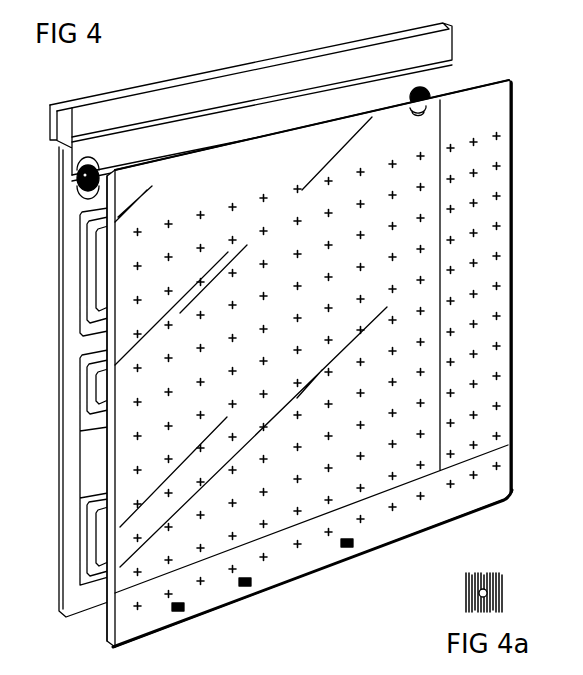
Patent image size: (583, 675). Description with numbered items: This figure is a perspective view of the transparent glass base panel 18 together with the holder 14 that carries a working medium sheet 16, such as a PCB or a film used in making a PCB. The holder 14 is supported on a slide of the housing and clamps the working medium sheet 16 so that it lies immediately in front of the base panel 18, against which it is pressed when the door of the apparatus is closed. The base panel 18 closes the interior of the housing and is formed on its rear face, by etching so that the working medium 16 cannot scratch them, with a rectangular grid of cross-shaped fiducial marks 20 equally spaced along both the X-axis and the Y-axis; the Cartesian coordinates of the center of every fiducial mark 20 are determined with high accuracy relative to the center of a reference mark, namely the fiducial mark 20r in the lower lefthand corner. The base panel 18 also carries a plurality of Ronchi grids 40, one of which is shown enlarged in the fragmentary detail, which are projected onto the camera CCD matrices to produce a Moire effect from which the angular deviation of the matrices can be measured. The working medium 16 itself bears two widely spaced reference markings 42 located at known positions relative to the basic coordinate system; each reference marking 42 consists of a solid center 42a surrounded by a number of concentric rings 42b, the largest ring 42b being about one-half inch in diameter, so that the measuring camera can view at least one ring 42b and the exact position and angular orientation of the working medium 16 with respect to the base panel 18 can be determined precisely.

In FIG. 4, the holder 14 is at (52, 130).
In FIG. 4, the working medium sheet 16 is at (72, 348).
In FIG. 4, the base panel 18 is at (513, 322).
In FIG. 4, the fiducial marks 20 is at (137, 436).
In FIG. 4, the reference fiducial mark 20r is at (137, 606).
In FIG. 4A, the Ronchi grids 40 is at (487, 590).
In FIG. 4, the reference markings 42 is at (74, 186).
In FIG. 4, the solid center 42a is at (100, 166).
In FIG. 4, the concentric rings 42b is at (78, 160).